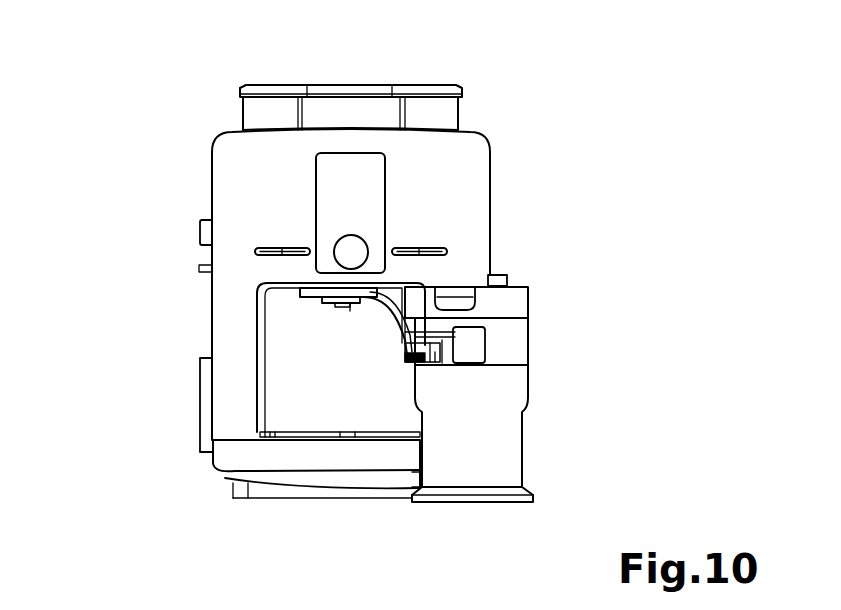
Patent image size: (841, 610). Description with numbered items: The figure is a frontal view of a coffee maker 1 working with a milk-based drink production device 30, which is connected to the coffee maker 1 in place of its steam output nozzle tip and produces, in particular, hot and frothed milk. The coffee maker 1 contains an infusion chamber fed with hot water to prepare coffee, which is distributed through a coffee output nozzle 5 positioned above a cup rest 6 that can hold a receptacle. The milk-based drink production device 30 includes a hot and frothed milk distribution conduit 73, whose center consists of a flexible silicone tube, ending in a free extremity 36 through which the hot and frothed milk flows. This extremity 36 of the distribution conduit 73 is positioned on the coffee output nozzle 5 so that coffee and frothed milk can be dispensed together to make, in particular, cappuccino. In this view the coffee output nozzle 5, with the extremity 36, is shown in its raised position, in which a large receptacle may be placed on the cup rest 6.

The coffee maker 1 is at (158, 88).
The coffee output nozzle 5 is at (360, 303).
The free extremity 36 is at (353, 302).
The hot and frothed milk distribution conduit 73 is at (389, 313).
The milk-based drink production device 30 is at (512, 352).
The cup rest 6 is at (330, 448).